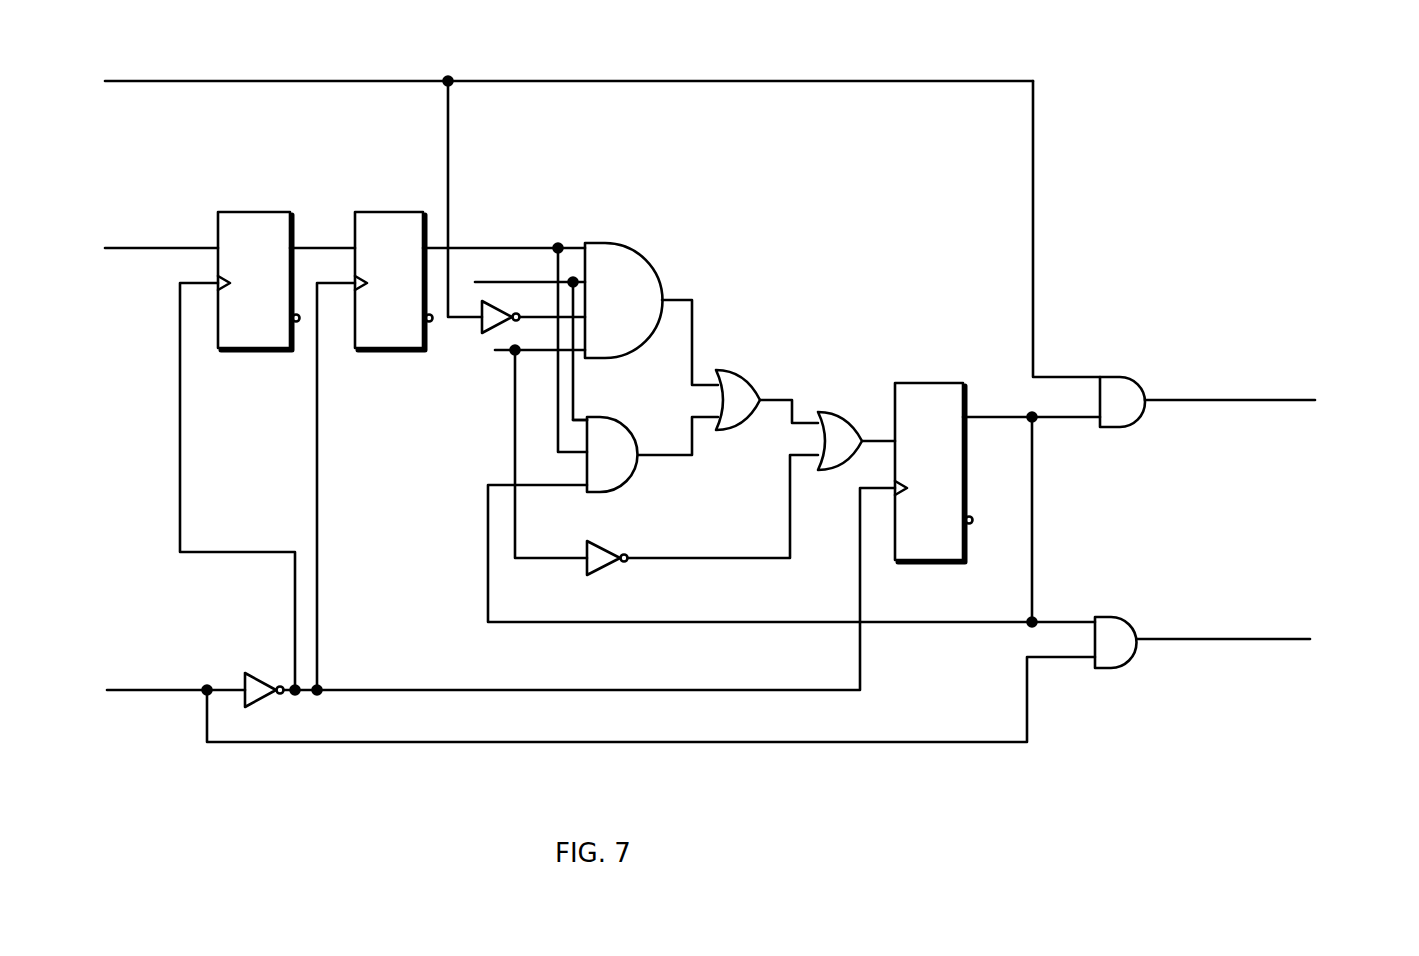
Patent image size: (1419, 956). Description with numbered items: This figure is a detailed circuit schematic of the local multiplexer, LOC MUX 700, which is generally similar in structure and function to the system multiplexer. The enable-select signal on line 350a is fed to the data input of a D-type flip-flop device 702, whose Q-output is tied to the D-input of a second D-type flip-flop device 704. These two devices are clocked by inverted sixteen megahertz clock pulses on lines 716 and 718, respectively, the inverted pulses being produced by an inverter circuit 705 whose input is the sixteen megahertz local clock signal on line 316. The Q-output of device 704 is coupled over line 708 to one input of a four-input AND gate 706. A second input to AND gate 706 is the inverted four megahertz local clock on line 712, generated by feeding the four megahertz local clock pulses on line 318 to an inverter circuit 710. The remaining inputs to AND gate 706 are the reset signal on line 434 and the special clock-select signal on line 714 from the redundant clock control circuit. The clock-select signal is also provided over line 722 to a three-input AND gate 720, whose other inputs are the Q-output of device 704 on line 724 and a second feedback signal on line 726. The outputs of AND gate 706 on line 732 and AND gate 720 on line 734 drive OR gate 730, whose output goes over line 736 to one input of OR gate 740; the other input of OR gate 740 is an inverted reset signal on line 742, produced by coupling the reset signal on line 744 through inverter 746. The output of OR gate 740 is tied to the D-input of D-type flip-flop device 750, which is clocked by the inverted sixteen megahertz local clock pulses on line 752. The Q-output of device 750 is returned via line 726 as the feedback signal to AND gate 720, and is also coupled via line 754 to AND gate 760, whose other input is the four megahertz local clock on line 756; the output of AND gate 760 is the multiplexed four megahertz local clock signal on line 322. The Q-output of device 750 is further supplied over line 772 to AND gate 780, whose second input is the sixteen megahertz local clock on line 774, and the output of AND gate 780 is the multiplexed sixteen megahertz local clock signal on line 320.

The LOC MUX 700 is at (1260, 55).
The loc_4 line 318 is at (133, 84).
The enb_sel line 350a is at (112, 250).
The D-type flip-flop device 702 is at (234, 212).
The D-type flip-flop device 704 is at (396, 212).
The inverter circuit 705 is at (268, 645).
The 4-input AND gate 706 is at (642, 255).
The line 708 is at (477, 248).
The inverter circuit 710 is at (503, 308).
The line 712 is at (552, 325).
The line 714 is at (573, 278).
The line 716 is at (181, 468).
The line 718 is at (319, 465).
The 3-input AND gate 720 is at (630, 422).
The line 722 is at (575, 385).
The line 724 is at (558, 413).
The line 726 is at (488, 540).
The OR gate 730 is at (727, 378).
The line 732 is at (693, 311).
The line 734 is at (665, 457).
The line 736 is at (788, 398).
The OR gate 740 is at (828, 412).
The line 742 is at (680, 558).
The line 744 is at (553, 560).
The inverter 746 is at (601, 541).
The D-type flip flop device 750 is at (912, 383).
The line 752 is at (861, 590).
The line 754 is at (1065, 420).
The line 756 is at (1050, 378).
The AND gate 760 is at (1120, 378).
The line 322 is at (1173, 402).
The line 772 is at (1050, 620).
The line 774 is at (1067, 660).
The AND gate 780 is at (1115, 617).
The line 320 is at (1183, 639).
The line 316 is at (135, 692).
The line 434 is at (512, 352).